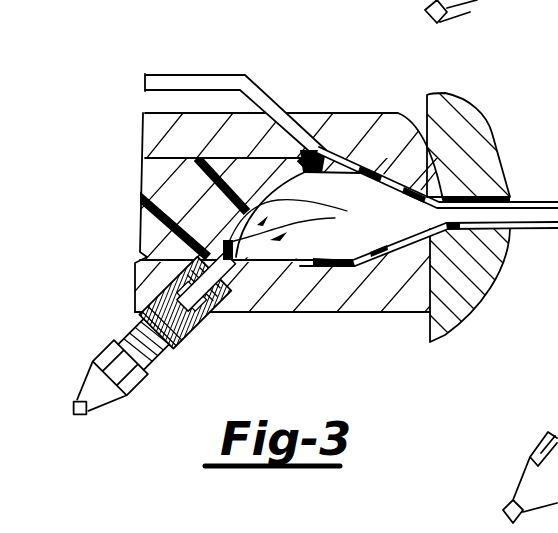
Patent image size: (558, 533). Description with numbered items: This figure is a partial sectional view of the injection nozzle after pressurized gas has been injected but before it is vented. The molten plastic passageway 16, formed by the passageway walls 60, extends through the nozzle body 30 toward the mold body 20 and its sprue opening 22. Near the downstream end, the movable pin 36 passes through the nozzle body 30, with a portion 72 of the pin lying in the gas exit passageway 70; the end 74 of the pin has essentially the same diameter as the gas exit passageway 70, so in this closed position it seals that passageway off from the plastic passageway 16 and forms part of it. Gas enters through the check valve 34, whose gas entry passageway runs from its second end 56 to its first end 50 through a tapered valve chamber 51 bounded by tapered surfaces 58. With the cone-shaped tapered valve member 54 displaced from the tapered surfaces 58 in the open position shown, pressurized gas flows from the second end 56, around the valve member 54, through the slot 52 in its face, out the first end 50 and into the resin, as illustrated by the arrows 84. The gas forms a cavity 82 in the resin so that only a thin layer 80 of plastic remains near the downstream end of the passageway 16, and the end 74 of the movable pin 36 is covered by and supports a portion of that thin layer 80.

The molten plastic passageway 16 is at (301, 258).
The mold body 20 is at (349, 219).
The sprue opening 22 is at (443, 197).
The nozzle body 30 is at (157, 275).
The check valve 34 is at (165, 370).
The movable pin 36 is at (186, 73).
The first end of the gas entry passageway 50 is at (240, 268).
The tapered valve chamber 51 is at (133, 297).
The slot 52 is at (233, 310).
The tapered valve member 54 is at (213, 313).
The second end of the gas entry passageway 56 is at (185, 345).
The tapered surfaces of the valve chamber 58 is at (200, 315).
The passageway walls 60 is at (143, 177).
The gas exit passageway 70 is at (273, 128).
The portion of the movable pin 72 is at (283, 120).
The end of the movable pin 74 is at (320, 153).
The thin layer 80 is at (386, 168).
The cavity 82 is at (405, 217).
The arrows 84 is at (393, 216).